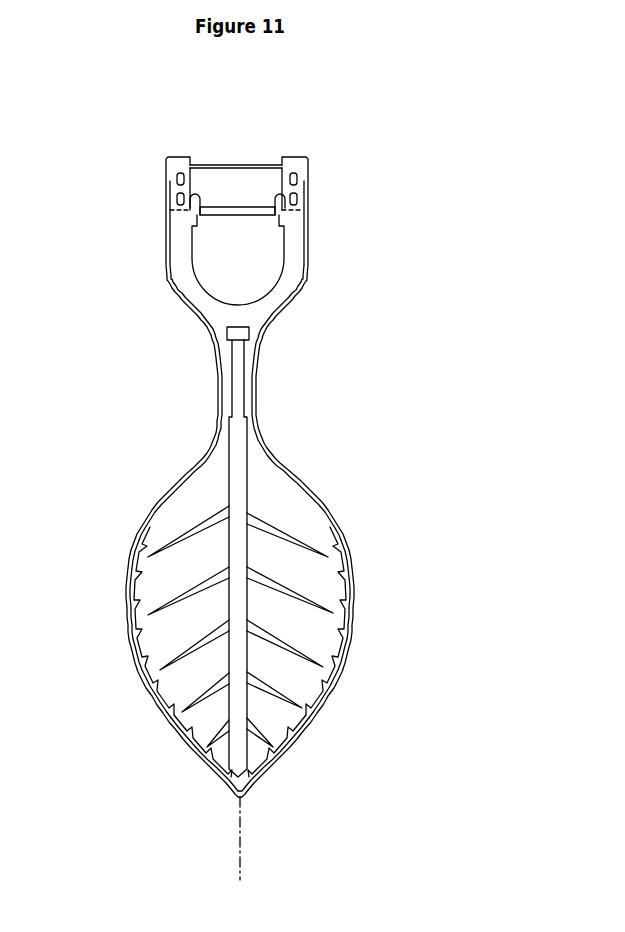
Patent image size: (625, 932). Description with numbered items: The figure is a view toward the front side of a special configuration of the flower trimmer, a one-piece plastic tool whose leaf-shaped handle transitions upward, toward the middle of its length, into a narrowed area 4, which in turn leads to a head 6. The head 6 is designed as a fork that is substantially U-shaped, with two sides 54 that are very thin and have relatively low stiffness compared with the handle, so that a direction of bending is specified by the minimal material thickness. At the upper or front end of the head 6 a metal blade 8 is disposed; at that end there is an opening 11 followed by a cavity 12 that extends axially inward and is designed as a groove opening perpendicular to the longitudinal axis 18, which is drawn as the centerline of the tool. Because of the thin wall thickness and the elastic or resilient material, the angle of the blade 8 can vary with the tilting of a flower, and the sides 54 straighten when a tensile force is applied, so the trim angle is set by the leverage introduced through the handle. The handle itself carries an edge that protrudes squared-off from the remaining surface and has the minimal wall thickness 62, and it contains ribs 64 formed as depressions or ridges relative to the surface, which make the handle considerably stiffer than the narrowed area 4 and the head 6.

The opening 11 is at (210, 157).
The blade 8 is at (232, 168).
The head 6 is at (320, 200).
The cavity 12 is at (262, 274).
The sides 54 is at (175, 262).
The narrowed area 4 is at (248, 366).
The minimal wall thickness 62 is at (168, 578).
The ribs 64 is at (238, 632).
The longitudinal axis 18 is at (240, 837).